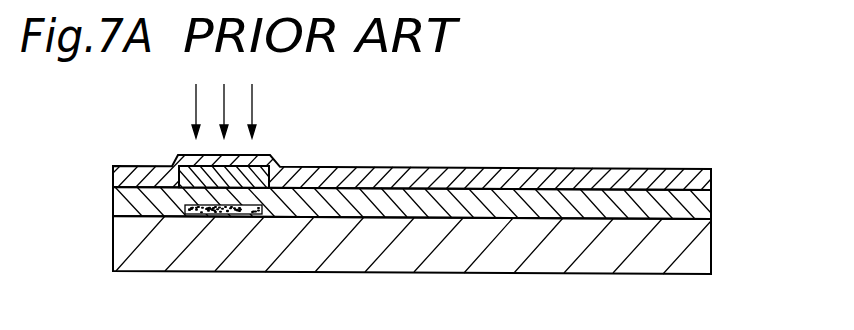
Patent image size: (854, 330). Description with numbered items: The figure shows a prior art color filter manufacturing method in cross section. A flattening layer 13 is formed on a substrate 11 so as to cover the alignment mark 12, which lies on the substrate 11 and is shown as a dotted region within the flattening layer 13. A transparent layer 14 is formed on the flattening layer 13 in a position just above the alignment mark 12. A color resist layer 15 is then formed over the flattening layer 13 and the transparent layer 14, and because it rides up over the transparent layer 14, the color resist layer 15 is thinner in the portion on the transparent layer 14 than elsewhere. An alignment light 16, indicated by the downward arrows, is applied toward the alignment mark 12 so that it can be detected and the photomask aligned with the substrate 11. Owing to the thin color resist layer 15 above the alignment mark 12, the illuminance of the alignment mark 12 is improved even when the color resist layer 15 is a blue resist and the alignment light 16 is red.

The substrate 11 is at (641, 262).
The alignment mark 12 is at (225, 215).
The flattening layer 13 is at (705, 207).
The transparent layer 14 is at (190, 172).
The color resist layer 15 is at (705, 181).
The alignment light 16 is at (254, 101).